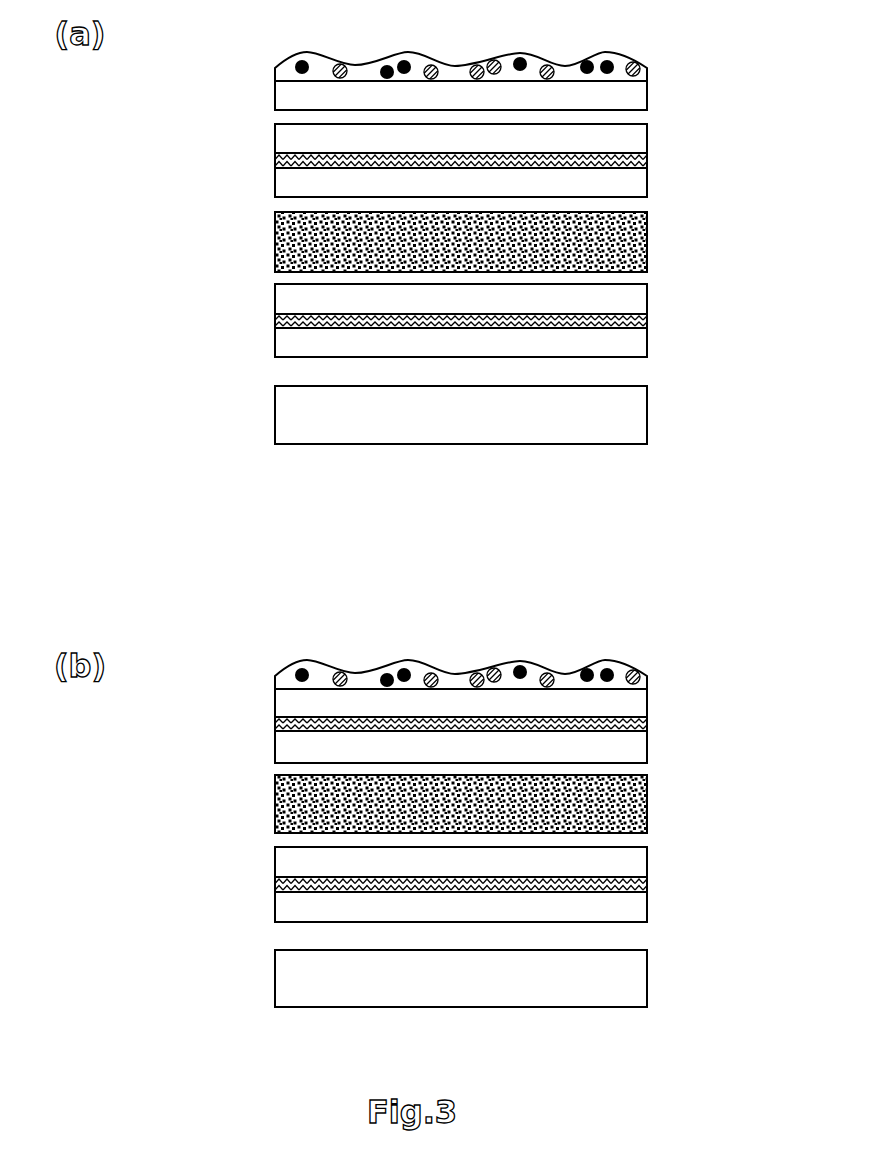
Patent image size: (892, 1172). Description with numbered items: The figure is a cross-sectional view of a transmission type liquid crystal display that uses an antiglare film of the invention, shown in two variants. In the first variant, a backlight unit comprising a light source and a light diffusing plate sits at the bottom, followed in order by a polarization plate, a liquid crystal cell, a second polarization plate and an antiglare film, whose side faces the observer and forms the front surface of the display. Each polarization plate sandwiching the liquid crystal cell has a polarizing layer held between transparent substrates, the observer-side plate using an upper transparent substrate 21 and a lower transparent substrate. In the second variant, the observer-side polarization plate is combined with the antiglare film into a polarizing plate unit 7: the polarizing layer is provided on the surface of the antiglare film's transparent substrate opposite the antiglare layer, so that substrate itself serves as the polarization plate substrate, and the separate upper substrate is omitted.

The transparent substrate 21 is at (290, 138).
The polarizing plate unit 7 is at (483, 718).